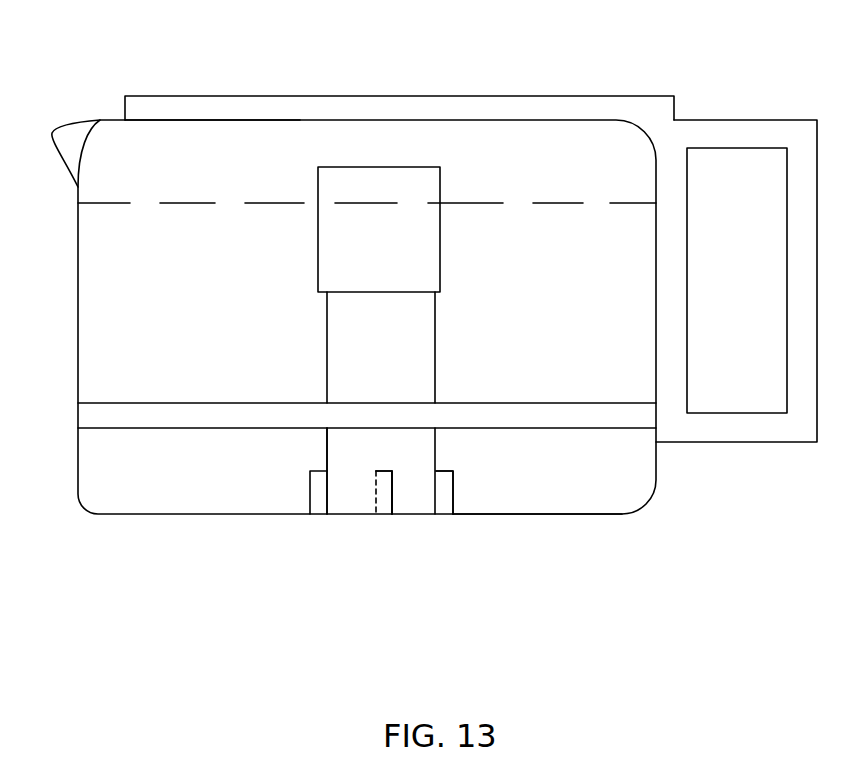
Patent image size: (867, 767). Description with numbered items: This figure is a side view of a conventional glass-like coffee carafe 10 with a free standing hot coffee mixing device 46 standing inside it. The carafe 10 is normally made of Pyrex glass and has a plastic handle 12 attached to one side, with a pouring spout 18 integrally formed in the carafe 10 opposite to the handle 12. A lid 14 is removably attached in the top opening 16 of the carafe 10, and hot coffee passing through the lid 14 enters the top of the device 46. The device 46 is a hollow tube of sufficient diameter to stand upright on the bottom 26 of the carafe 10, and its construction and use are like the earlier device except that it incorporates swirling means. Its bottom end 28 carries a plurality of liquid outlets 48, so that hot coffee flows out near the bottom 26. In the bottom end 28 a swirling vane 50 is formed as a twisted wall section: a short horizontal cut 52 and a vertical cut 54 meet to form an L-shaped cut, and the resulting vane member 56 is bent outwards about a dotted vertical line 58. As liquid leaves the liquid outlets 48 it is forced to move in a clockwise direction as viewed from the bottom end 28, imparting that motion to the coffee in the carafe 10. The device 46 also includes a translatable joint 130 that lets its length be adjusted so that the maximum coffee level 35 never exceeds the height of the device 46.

The coffee carafe 10 is at (116, 548).
The handle 12 is at (745, 442).
The lid 14 is at (208, 96).
The top opening 16 is at (188, 133).
The pouring spout 18 is at (65, 170).
The bottom 26 is at (483, 511).
The bottom end 28 is at (327, 443).
The maximum coffee level 35 is at (548, 205).
The hot coffee mixing device 46 is at (466, 371).
The liquid outlets 48 is at (318, 502).
The swirling vane 50 is at (379, 452).
The short horizontal cut 52 is at (385, 471).
The vertical cut 54 is at (393, 490).
The vane member 56 is at (453, 481).
The dotted vertical line 58 is at (375, 488).
The translatable joint 130 is at (456, 291).